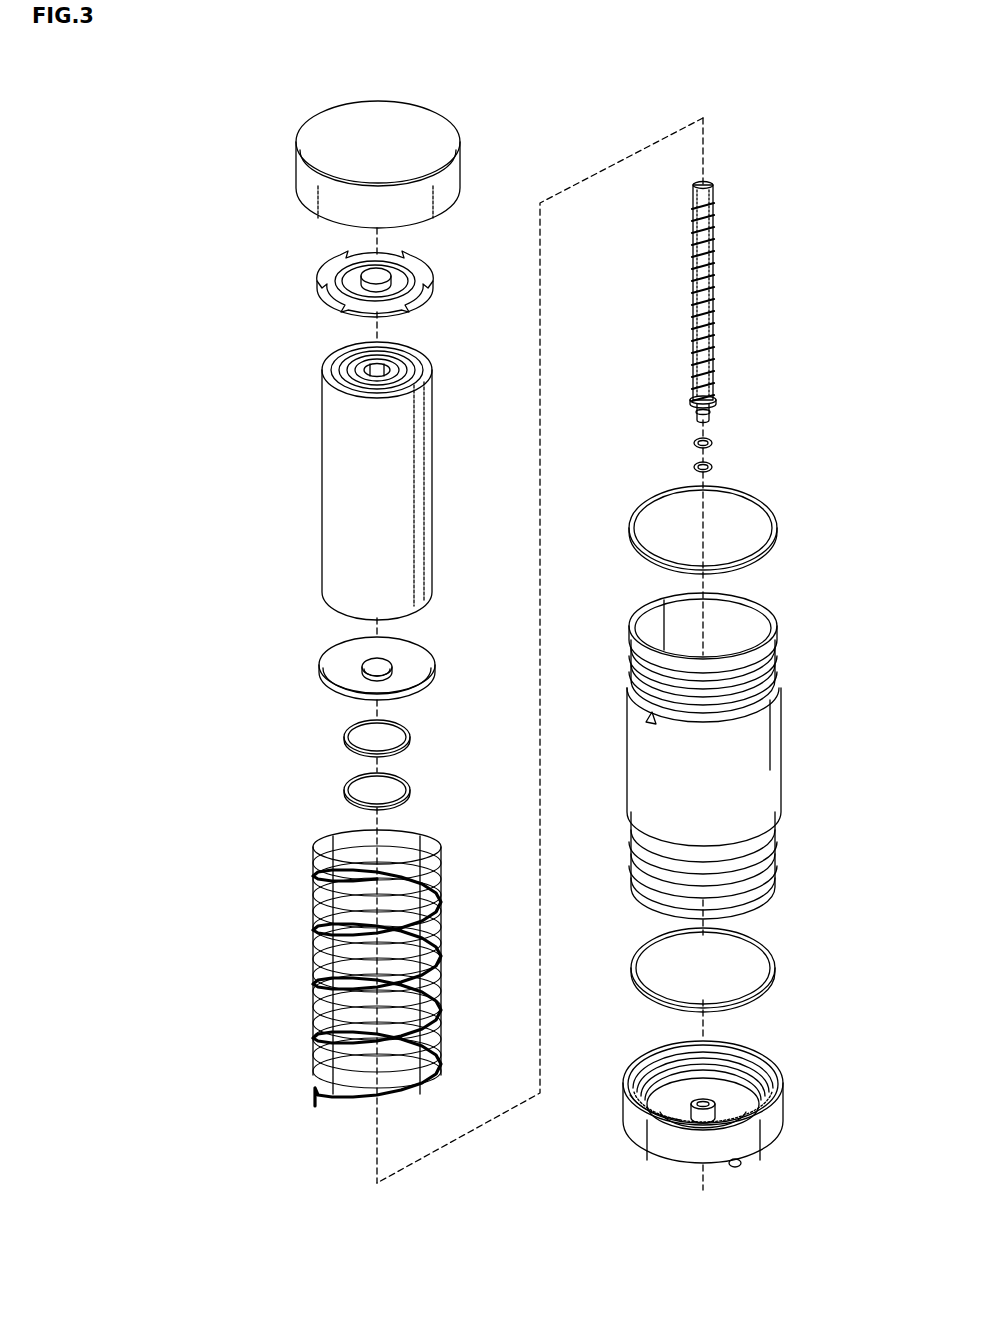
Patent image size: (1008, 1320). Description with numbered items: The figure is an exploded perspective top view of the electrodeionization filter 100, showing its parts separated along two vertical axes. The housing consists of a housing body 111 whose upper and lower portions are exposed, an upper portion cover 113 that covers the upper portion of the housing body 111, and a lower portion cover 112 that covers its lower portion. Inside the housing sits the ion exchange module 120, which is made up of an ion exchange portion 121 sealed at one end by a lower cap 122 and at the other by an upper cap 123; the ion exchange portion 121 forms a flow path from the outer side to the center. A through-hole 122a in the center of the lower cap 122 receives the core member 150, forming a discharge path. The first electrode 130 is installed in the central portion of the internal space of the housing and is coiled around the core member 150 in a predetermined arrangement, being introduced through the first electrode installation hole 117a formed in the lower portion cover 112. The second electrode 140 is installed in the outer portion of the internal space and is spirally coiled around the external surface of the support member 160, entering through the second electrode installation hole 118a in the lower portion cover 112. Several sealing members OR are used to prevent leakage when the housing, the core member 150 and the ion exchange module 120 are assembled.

The electrodeionization filter 100 is at (270, 82).
The housing body 111 is at (762, 742).
The lower portion cover 112 is at (785, 1100).
The upper portion cover 113 is at (297, 178).
The first electrode installation hole 117a is at (690, 1114).
The second electrode installation hole 118a is at (650, 1093).
The ion exchange module 120 is at (184, 283).
The ion exchange portion 121 is at (330, 470).
The lower cap 122 is at (327, 688).
The through-hole 122a is at (362, 664).
The upper cap 123 is at (328, 280).
The first electrode 130 is at (716, 230).
The second electrode 140 is at (313, 915).
The core member 150 is at (716, 213).
The support member 160 is at (320, 847).
The sealing member OR is at (346, 790).